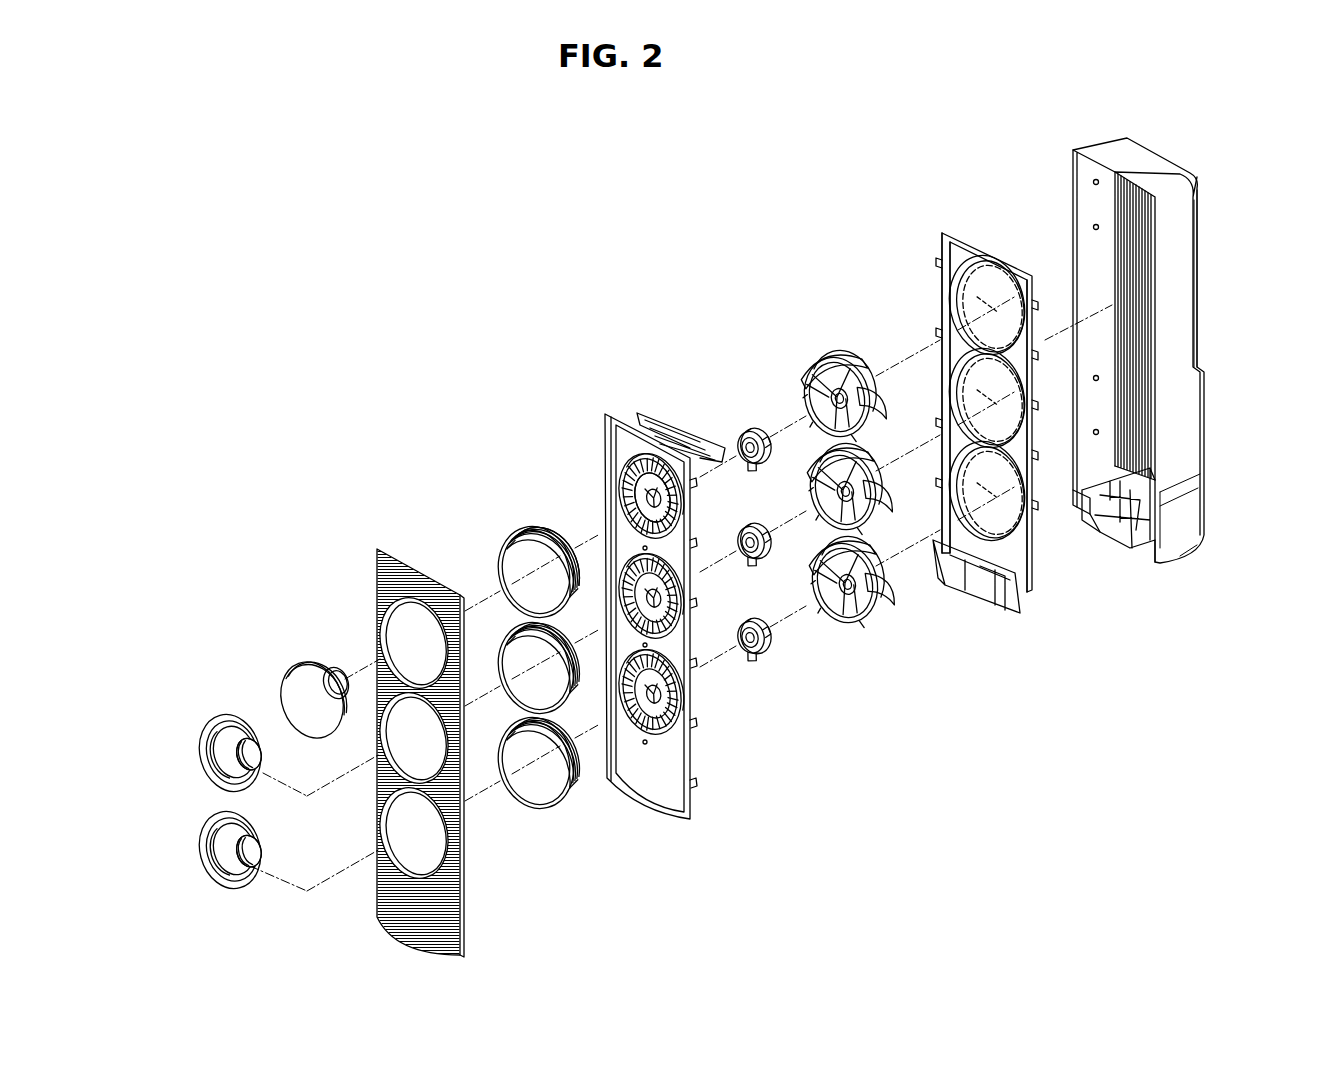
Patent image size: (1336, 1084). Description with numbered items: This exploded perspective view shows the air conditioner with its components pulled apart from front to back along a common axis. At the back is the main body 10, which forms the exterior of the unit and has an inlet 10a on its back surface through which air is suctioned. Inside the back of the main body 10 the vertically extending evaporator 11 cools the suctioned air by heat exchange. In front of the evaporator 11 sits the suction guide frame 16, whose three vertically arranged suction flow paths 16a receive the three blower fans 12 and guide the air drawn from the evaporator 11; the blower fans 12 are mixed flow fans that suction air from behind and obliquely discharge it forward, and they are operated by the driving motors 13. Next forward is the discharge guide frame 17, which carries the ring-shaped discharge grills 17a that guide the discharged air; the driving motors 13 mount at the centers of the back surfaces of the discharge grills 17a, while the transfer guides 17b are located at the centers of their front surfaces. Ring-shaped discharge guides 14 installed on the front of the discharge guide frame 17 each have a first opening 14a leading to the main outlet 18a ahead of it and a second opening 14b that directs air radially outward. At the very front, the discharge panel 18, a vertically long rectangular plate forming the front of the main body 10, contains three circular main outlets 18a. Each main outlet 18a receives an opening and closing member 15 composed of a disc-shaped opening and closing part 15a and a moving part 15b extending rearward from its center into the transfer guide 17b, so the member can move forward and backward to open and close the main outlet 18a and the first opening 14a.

The main body 10 is at (1203, 210).
The inlet 10a is at (1199, 246).
The evaporator 11 is at (1140, 298).
The blower fans 12 is at (834, 358).
The driving motors 13 is at (749, 428).
The discharge guides 14 is at (519, 534).
The first opening 14a is at (522, 572).
The second opening 14b is at (572, 527).
The opening and closing member 15 is at (283, 661).
The opening and closing part 15a is at (214, 733).
The moving part 15b is at (338, 672).
The suction guide frame 16 is at (1050, 604).
The suction flow paths 16a is at (983, 292).
The discharge guide frame 17 is at (705, 763).
The discharge grills 17a is at (631, 478).
The transfer guides 17b is at (632, 487).
The discharge panel 18 is at (470, 865).
The main outlets 18a is at (399, 632).